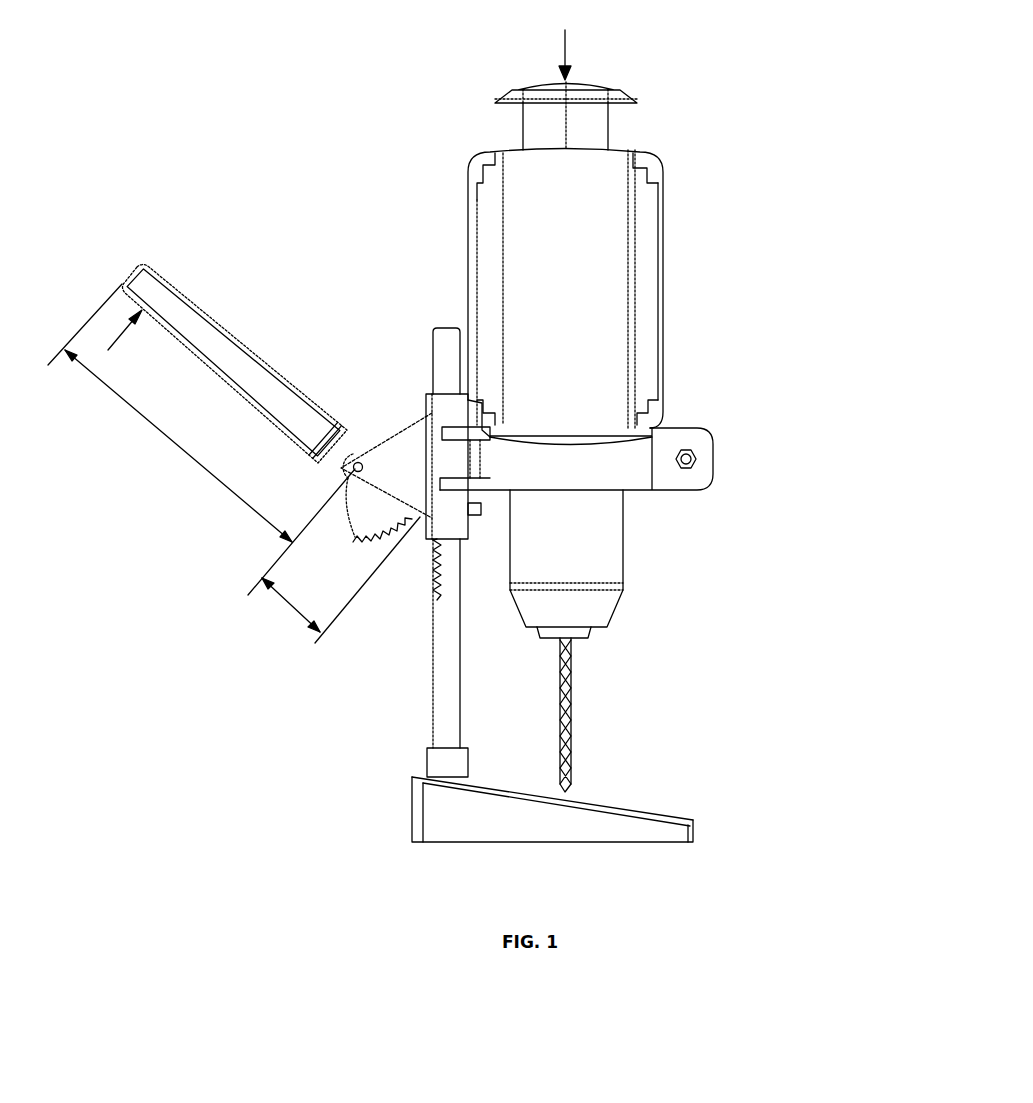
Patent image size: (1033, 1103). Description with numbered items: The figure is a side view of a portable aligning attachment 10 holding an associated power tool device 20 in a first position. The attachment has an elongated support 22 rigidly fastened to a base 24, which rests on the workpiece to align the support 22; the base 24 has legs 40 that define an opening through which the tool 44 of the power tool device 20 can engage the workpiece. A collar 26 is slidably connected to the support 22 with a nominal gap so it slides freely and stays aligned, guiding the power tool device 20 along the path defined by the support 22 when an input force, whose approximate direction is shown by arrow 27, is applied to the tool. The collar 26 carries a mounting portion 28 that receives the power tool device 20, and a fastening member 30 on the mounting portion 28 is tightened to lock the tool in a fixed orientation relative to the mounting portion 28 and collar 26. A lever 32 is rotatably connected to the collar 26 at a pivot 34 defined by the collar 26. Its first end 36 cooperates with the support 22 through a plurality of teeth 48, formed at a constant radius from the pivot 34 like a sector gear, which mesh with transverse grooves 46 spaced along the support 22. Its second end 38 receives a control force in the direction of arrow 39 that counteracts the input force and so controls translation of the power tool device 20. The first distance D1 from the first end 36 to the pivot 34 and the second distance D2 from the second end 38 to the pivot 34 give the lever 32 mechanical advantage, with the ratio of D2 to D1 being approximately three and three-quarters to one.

The aligning attachment 10 is at (357, 332).
The power tool device 20 is at (697, 158).
The elongated support 22 is at (433, 720).
The base 24 is at (410, 808).
The collar 26 is at (425, 396).
The arrow (input force) 27 is at (567, 48).
The mounting portion 28 is at (668, 498).
The fastening member 30 is at (697, 460).
The lever 32 is at (225, 318).
The pivot 34 is at (356, 455).
The first end 36 is at (352, 520).
The second end 38 is at (157, 273).
The arrow (control force) 39 is at (108, 350).
The legs 40 is at (650, 812).
The tool 44 is at (568, 735).
The transverse grooves 46 is at (433, 575).
The teeth 48 is at (372, 545).
The first distance D1 is at (285, 600).
The second distance D2 is at (200, 464).